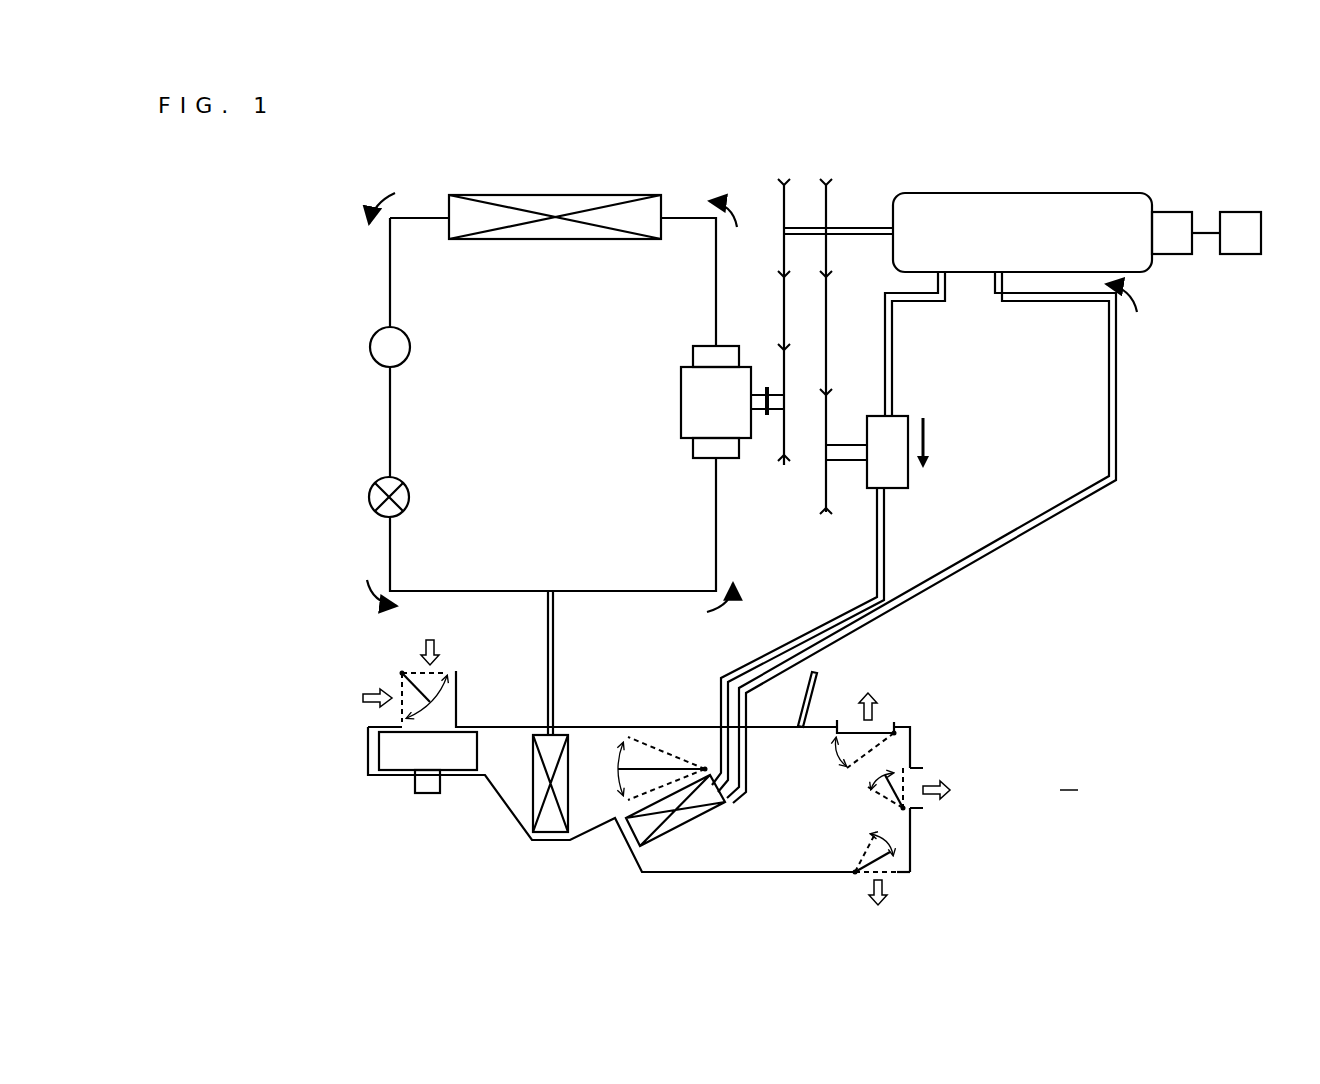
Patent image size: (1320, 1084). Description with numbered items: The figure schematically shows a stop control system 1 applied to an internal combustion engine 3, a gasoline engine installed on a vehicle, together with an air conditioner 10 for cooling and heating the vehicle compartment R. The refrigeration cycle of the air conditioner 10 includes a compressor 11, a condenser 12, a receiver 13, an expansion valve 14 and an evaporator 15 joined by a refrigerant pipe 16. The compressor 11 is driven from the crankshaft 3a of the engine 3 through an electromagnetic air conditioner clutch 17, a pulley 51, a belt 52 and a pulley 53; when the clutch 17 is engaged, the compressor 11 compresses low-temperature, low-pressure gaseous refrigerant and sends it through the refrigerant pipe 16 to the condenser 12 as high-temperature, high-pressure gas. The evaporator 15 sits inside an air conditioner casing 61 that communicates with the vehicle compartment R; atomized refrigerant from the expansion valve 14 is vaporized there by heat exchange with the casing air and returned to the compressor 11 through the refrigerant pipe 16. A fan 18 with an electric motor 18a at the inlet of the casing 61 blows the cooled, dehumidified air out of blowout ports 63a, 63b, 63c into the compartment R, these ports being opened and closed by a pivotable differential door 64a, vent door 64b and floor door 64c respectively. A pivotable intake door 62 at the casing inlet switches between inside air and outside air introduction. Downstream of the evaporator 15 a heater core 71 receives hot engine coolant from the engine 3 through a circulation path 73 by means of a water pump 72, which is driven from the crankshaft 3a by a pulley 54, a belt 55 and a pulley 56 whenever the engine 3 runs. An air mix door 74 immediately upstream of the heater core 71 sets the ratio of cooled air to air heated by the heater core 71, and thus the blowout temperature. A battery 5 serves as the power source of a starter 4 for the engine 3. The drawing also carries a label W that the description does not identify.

The stop control system 1 is at (876, 148).
The air conditioner 10 is at (678, 184).
The compressor 11 is at (681, 400).
The condenser 12 is at (553, 195).
The receiver 13 is at (378, 333).
The expansion valve 14 is at (377, 482).
The evaporator 15 is at (532, 813).
The refrigerant pipe 16 is at (648, 590).
The electromagnetic air conditioner clutch 17 is at (767, 386).
The fan 18 is at (378, 750).
The electric motor 18a is at (415, 791).
The internal combustion engine 3 is at (975, 193).
The crankshaft 3a is at (867, 227).
The starter 4 is at (1175, 212).
The battery 5 is at (1244, 212).
The pulley 51 is at (784, 466).
The belt 52 is at (783, 303).
The pulley 53 is at (783, 184).
The pulley 54 is at (826, 416).
The belt 55 is at (826, 327).
The pulley 56 is at (825, 184).
The air conditioner casing 61 is at (516, 726).
The intake door 62 is at (428, 690).
The blowout port 63a is at (840, 726).
The blowout port 63b is at (923, 808).
The blowout port 63c is at (896, 876).
The differential door 64a is at (896, 725).
The vent door 64b is at (910, 780).
The floor door 64c is at (876, 847).
The heater core 71 is at (688, 828).
The water pump 72 is at (905, 489).
The circulation path 73 is at (1085, 492).
The air mix door 74 is at (660, 746).
The warm water valve W is at (798, 718).
The vehicle compartment R is at (1069, 777).